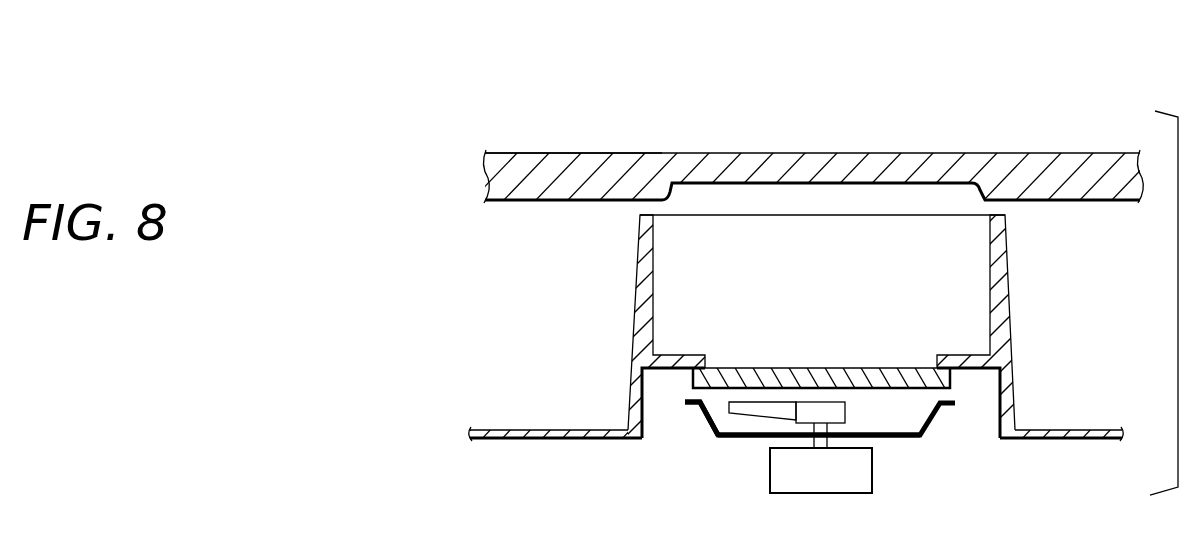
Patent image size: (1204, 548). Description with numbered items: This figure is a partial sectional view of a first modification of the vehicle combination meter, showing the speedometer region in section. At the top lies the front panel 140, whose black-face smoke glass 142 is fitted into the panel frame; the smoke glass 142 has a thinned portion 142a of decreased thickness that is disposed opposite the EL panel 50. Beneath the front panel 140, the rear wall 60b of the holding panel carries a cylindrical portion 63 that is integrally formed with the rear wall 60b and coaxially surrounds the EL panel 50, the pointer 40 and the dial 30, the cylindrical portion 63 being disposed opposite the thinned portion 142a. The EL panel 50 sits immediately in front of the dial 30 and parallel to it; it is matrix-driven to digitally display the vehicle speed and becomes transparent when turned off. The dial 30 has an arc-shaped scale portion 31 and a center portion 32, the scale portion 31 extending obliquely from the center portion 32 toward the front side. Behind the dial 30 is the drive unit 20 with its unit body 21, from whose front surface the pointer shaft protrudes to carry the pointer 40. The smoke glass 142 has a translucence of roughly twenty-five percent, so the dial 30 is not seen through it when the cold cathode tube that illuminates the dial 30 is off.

The front panel 140 is at (989, 140).
The smoke glass 142 is at (600, 153).
The thinned portion 142a is at (802, 164).
The cylindrical portion 63 is at (1014, 283).
The rear wall 60b is at (1070, 427).
The EL panel 50 is at (870, 360).
The pointer 40 is at (779, 392).
The dial 30 is at (914, 451).
The scale portion 31 is at (700, 420).
The center portion 32 is at (742, 440).
The drive unit 20 is at (858, 481).
The unit body 21 is at (818, 486).